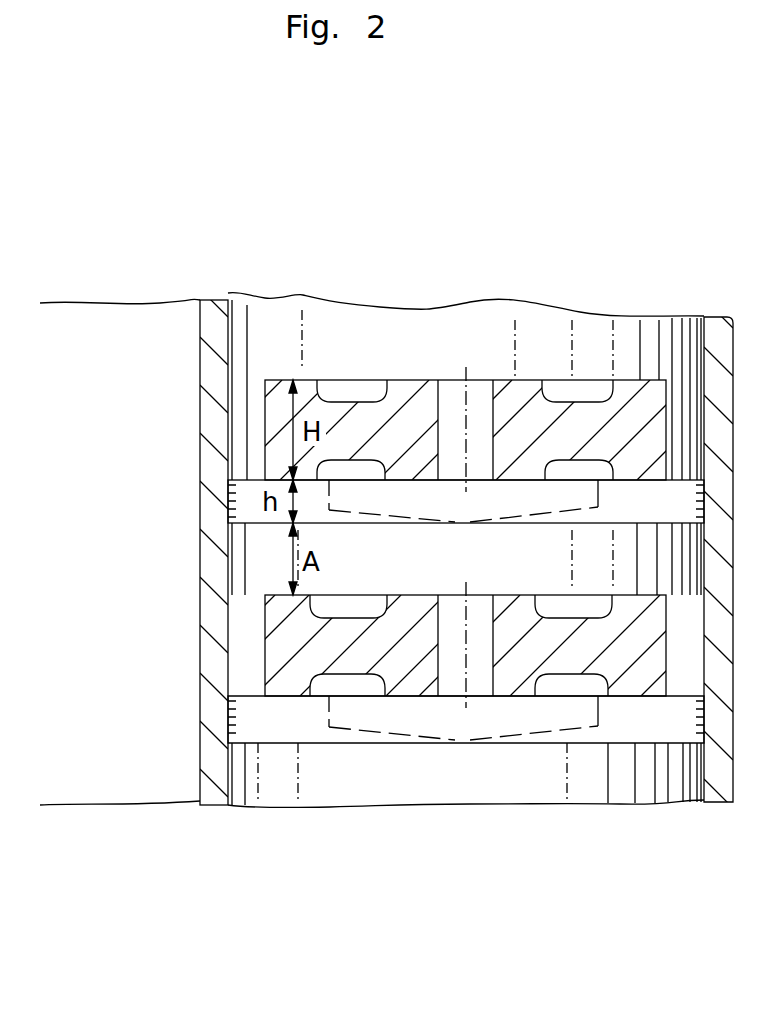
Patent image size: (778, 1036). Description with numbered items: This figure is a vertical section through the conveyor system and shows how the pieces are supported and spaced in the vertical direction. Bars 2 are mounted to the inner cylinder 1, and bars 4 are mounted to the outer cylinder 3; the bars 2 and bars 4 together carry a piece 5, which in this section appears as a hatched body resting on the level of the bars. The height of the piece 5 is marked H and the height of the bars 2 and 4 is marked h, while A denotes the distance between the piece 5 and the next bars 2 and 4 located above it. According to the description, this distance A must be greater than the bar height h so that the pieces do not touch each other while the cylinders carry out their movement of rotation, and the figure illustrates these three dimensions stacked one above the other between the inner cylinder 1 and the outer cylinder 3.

The inner cylinder 1 is at (218, 305).
The bars 2 is at (288, 728).
The outer cylinder 3 is at (716, 333).
The bars 4 is at (633, 732).
The piece 5 is at (422, 398).